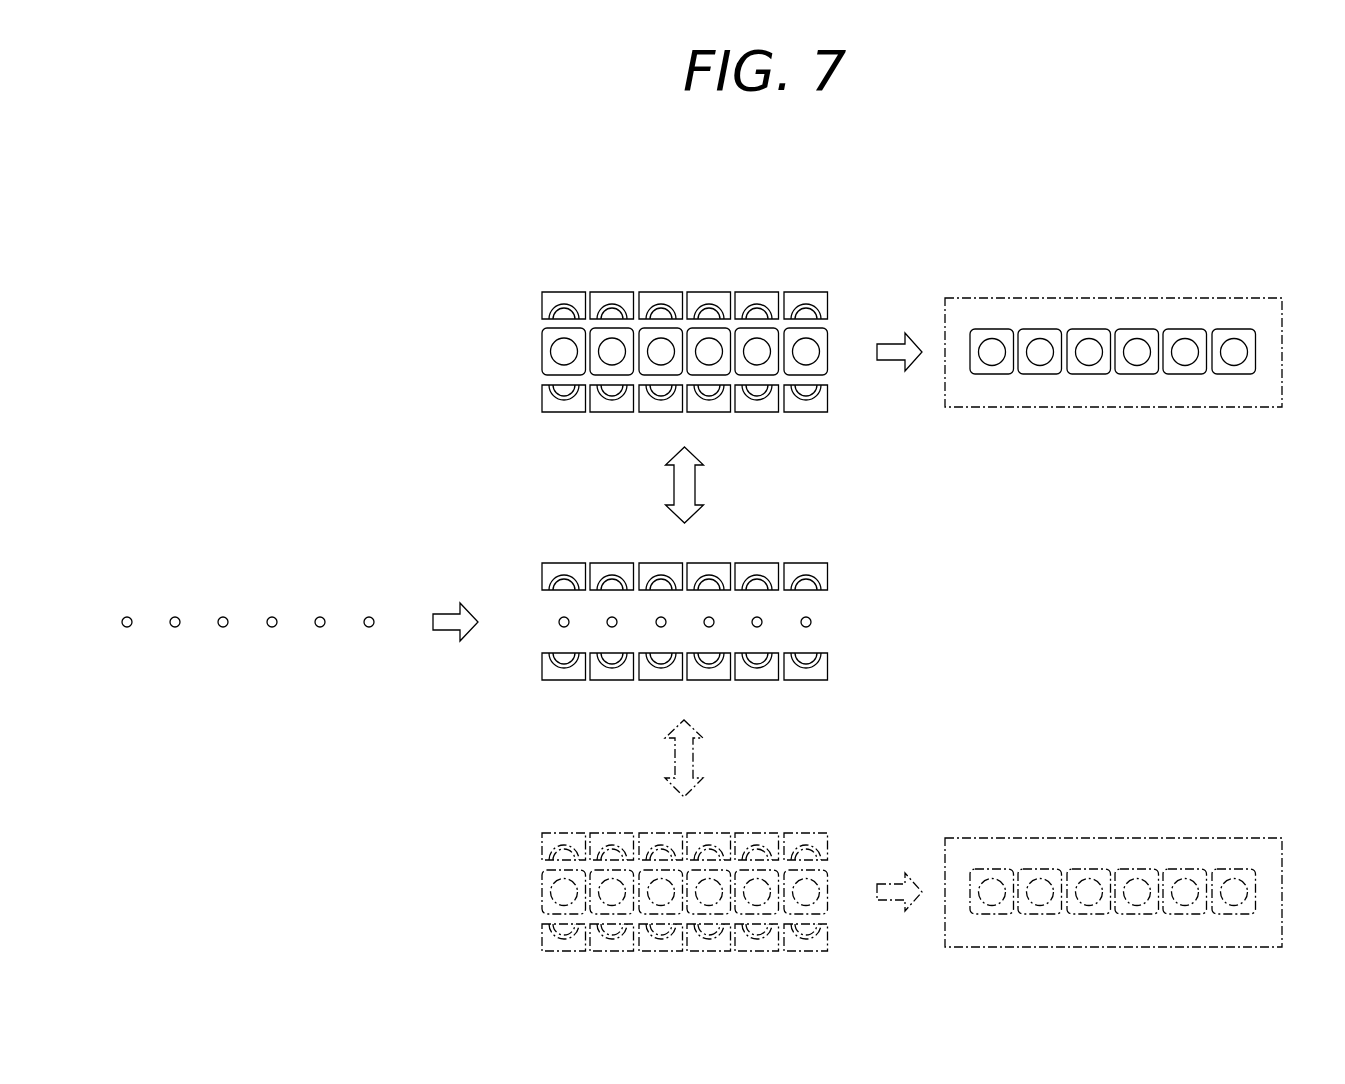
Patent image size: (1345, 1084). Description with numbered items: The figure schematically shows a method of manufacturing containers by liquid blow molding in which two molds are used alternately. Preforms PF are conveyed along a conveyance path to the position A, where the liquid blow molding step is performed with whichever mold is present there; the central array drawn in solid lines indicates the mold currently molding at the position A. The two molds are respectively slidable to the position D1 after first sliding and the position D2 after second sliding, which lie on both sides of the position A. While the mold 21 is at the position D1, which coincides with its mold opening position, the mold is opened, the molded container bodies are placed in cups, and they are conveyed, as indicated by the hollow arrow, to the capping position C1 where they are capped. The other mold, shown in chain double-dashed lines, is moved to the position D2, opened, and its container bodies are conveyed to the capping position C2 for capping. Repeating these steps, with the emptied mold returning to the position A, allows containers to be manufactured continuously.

The mold 21 is at (793, 292).
The position A is at (719, 589).
The capping position C1 is at (1131, 304).
The capping position C2 is at (1131, 846).
The position after first sliding D1 is at (672, 310).
The position after second sliding D2 is at (658, 848).
The preform PF is at (372, 616).